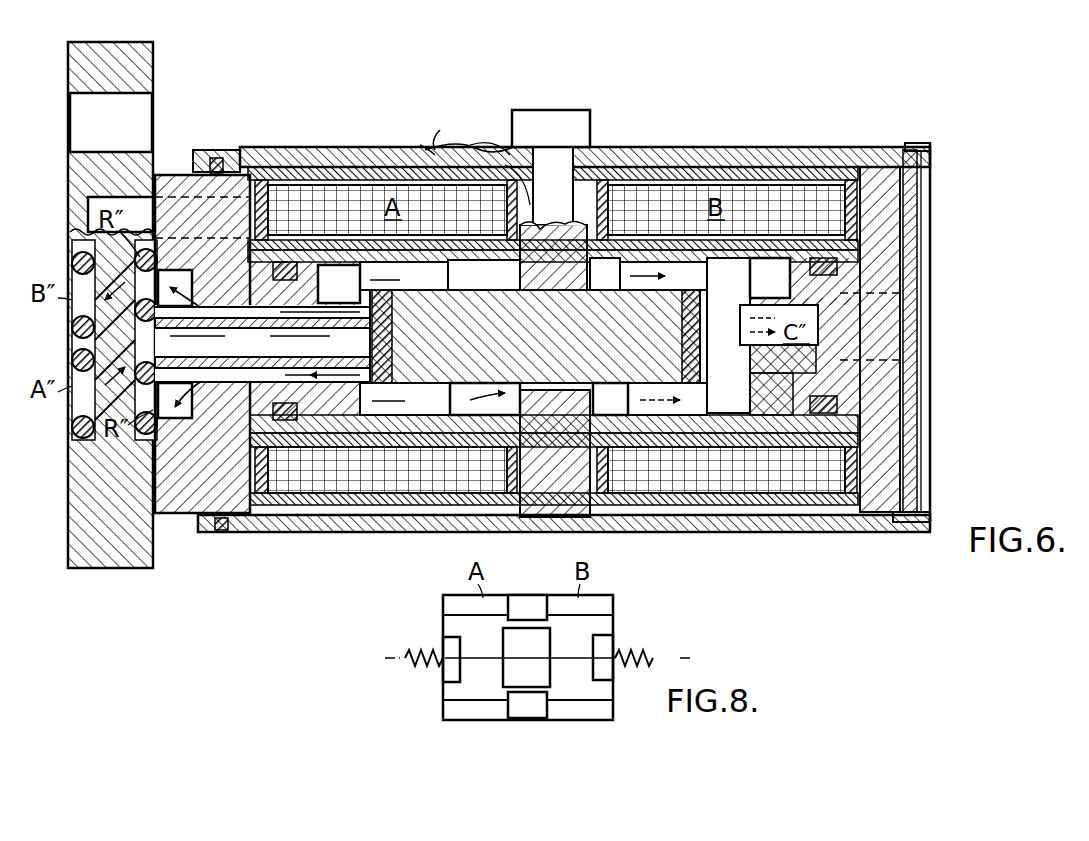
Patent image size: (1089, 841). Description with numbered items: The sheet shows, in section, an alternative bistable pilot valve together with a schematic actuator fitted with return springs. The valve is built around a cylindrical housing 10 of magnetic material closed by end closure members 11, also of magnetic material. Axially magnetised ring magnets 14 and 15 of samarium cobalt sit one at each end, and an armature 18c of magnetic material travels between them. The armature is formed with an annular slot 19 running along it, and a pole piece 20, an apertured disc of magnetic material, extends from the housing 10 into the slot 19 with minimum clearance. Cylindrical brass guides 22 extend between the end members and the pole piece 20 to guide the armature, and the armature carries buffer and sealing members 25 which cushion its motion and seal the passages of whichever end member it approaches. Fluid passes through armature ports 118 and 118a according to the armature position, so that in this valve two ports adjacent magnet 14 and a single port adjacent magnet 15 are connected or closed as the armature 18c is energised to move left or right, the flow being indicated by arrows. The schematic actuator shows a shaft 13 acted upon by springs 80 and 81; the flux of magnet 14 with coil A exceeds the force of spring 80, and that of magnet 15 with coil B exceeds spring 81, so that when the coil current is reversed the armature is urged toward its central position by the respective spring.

In FIG. 6, the cylindrical housing 10 is at (500, 147).
In FIG. 6, the end closure member 11 is at (243, 296).
In FIG. 8, the shaft 13 is at (487, 668).
In FIG. 6, the ring magnet 14 is at (350, 295).
In FIG. 8, the ring magnet 14 is at (446, 646).
In FIG. 6, the ring magnet 15 is at (781, 288).
In FIG. 8, the ring magnet 15 is at (604, 671).
In FIG. 6, the armature 18c is at (662, 332).
In FIG. 6, the annular slot 19 is at (464, 295).
In FIG. 6, the pole piece 20 is at (559, 282).
In FIG. 8, the pole piece 20 is at (537, 598).
In FIG. 6, the cylindrical brass guide 22 is at (304, 245).
In FIG. 6, the buffer and sealing member 25 is at (388, 296).
In FIG. 8, the spring 80 is at (422, 664).
In FIG. 8, the spring 81 is at (632, 654).
In FIG. 6, the armature port 118 is at (700, 402).
In FIG. 6, the armature port 118a is at (430, 396).